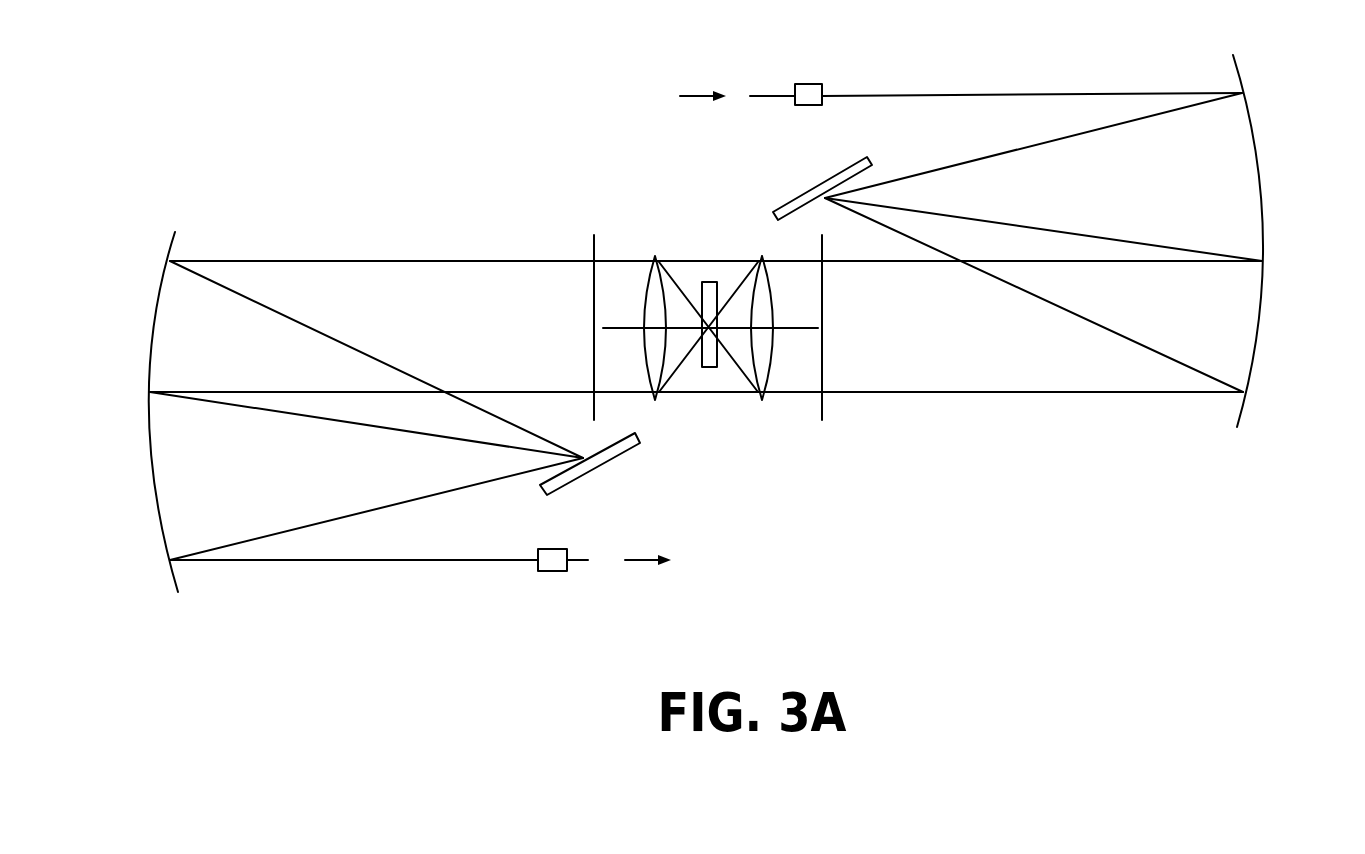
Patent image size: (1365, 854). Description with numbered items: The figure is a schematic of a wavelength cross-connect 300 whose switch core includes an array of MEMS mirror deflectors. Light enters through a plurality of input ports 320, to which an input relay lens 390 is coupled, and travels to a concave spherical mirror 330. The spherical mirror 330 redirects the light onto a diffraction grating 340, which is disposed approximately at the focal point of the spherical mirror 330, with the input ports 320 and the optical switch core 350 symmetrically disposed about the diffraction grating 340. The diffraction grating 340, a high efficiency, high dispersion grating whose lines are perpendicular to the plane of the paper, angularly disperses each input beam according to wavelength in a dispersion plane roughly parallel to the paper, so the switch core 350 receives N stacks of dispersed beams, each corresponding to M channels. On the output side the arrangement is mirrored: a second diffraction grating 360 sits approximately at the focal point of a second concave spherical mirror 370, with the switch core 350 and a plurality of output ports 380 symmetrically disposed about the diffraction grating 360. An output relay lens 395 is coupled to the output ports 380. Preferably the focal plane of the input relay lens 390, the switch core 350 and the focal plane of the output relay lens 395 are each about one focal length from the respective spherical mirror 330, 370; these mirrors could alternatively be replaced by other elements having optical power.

The optical wavelength router / demultiplexer system 300 is at (398, 122).
The input ports 320 is at (758, 96).
The spherical mirror 330 is at (1245, 80).
The diffraction grating 340 is at (790, 200).
The optical switch core 350 is at (605, 416).
The diffraction grating 360 is at (580, 480).
The spherical mirror 370 is at (162, 287).
The output ports 380 is at (588, 560).
The input relay lens 390 is at (823, 95).
The output relay lens 395 is at (550, 571).